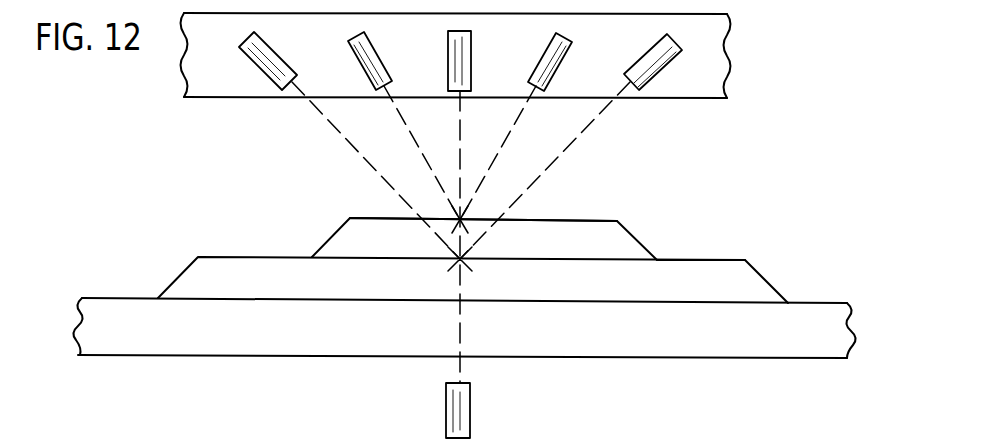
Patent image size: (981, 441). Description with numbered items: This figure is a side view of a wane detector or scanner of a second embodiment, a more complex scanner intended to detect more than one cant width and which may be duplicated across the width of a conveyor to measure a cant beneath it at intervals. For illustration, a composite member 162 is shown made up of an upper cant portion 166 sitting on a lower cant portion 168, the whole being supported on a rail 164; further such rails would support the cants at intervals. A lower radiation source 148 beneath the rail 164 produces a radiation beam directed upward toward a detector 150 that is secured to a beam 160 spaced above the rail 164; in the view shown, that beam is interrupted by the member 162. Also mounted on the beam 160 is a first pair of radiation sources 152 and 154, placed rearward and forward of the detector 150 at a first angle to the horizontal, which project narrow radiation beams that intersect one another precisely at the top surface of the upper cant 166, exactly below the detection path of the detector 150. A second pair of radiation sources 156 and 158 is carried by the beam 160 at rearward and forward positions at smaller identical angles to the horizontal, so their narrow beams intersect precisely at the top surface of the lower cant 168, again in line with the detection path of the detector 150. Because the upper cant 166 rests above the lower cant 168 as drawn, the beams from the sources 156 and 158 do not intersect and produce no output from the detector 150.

The lower radiation source 148 is at (470, 410).
The detector 150 is at (471, 58).
The radiation source 152 is at (377, 61).
The radiation source 154 is at (568, 58).
The radiation source 156 is at (253, 65).
The radiation source 158 is at (664, 69).
The beam 160 is at (712, 13).
The composite member 162 is at (612, 210).
The rail 164 is at (138, 350).
The upper cant portion 166 is at (566, 234).
The lower cant portion 168 is at (682, 278).